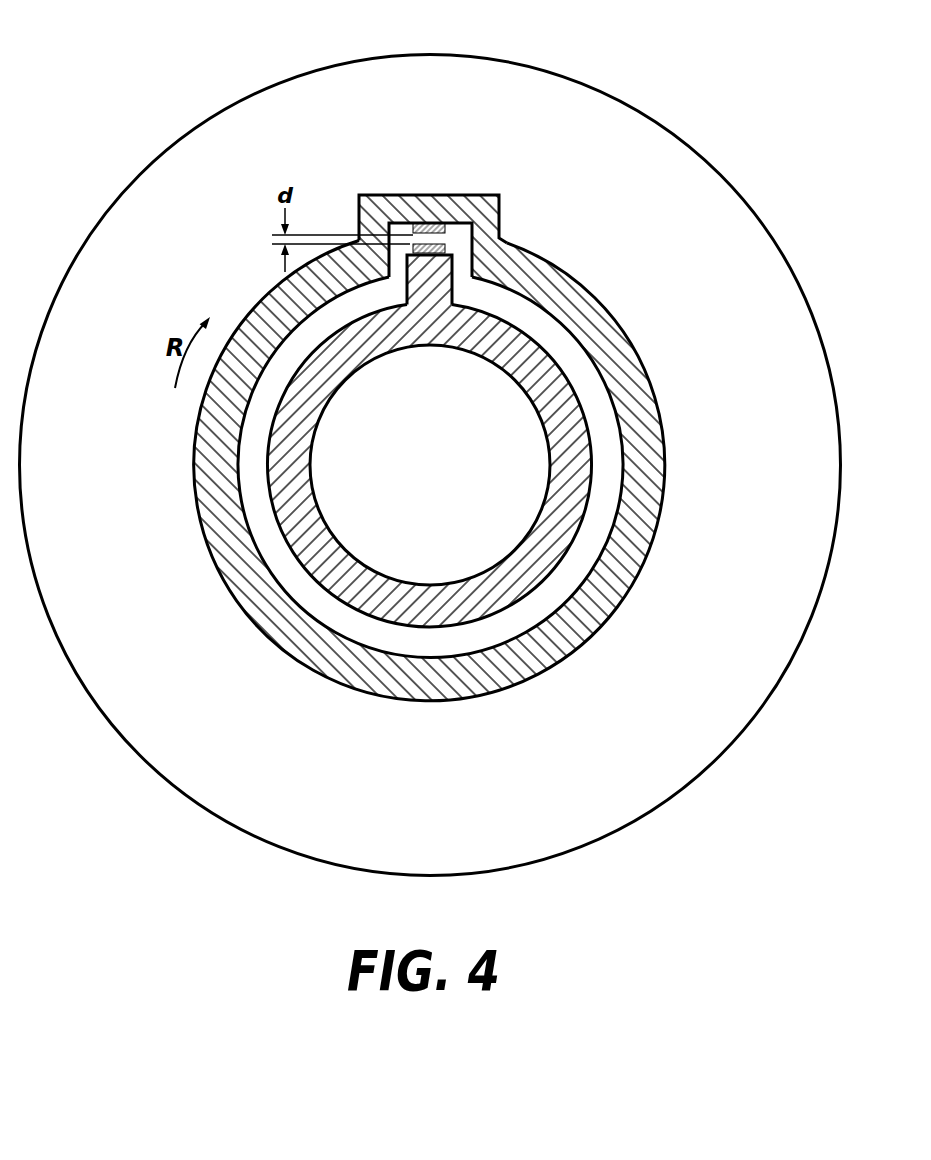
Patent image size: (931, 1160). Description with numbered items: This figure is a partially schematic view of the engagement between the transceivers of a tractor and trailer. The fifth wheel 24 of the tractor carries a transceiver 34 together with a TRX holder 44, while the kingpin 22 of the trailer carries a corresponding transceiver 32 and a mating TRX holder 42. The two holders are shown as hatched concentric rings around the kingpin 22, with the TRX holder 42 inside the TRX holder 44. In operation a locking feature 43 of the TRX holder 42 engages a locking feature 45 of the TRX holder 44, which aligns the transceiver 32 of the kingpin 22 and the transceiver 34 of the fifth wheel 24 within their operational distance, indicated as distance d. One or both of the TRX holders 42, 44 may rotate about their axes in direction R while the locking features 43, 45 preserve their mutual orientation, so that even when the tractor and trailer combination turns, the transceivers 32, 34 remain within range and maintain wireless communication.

The kingpin 22 is at (447, 478).
The fifth wheel 24 is at (743, 478).
The transceiver 32 is at (408, 247).
The transceiver 34 is at (447, 226).
The TRX holder 42 is at (368, 616).
The locking feature 43 is at (450, 273).
The TRX holder 44 is at (255, 613).
The locking feature 45 is at (424, 196).